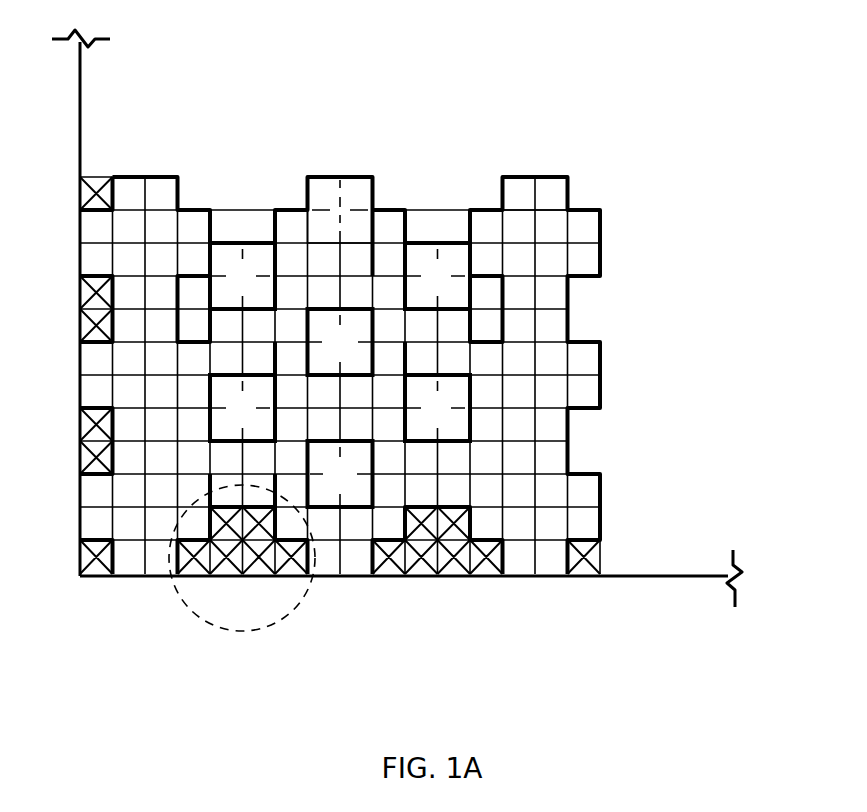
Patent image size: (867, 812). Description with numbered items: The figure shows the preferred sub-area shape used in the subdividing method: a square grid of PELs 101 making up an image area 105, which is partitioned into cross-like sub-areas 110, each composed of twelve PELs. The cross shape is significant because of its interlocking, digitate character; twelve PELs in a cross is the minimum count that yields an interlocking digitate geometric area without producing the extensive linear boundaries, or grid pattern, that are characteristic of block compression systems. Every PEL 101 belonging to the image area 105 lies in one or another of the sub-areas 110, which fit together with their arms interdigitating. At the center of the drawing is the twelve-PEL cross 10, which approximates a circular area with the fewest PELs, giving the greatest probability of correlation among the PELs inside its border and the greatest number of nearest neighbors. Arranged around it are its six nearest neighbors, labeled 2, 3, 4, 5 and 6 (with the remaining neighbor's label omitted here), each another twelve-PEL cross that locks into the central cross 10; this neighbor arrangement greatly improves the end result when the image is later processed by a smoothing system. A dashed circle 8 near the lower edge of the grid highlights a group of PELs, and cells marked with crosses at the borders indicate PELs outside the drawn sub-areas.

The PELs 101 is at (357, 192).
The image area 105 is at (437, 180).
The sub-areas 110 is at (545, 177).
The encircled region of cells 8 is at (203, 617).
The nearest neighbor 2 is at (437, 276).
The nearest neighbor 3 is at (437, 408).
The nearest neighbor 4 is at (340, 474).
The nearest neighbor 5 is at (242, 408).
The nearest neighbor 6 is at (242, 276).
The twelve-PEL cross 10 is at (340, 342).